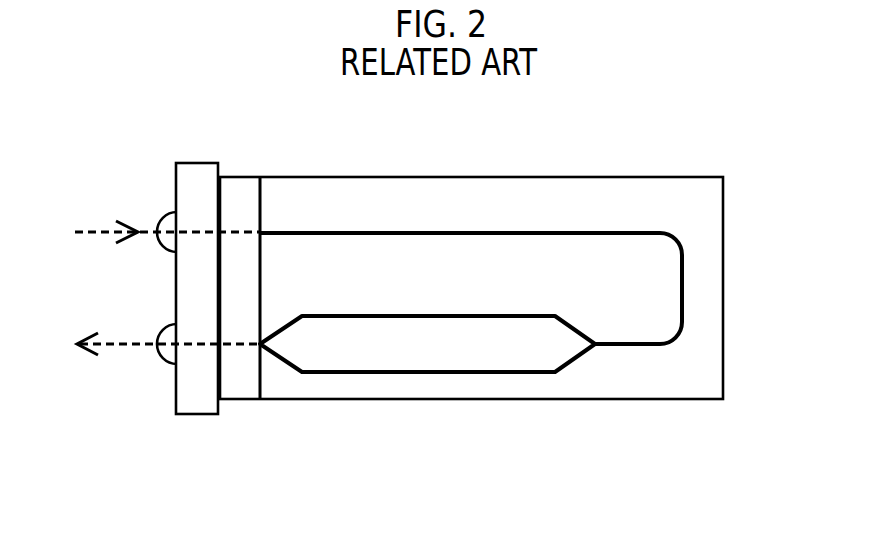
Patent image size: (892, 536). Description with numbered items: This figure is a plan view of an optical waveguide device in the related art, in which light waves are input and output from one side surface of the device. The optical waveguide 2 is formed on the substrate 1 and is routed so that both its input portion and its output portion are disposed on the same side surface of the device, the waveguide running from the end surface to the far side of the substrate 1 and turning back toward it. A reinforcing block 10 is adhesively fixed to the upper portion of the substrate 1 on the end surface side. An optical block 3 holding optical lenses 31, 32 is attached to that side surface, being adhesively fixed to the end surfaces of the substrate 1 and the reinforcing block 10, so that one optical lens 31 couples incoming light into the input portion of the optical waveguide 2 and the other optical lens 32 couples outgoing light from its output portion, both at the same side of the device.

The substrate 1 is at (670, 205).
The optical waveguide 2 is at (690, 261).
The optical block 3 is at (200, 418).
The reinforcing block 10 is at (240, 198).
The optical lens 31 is at (160, 212).
The optical lens 32 is at (160, 360).